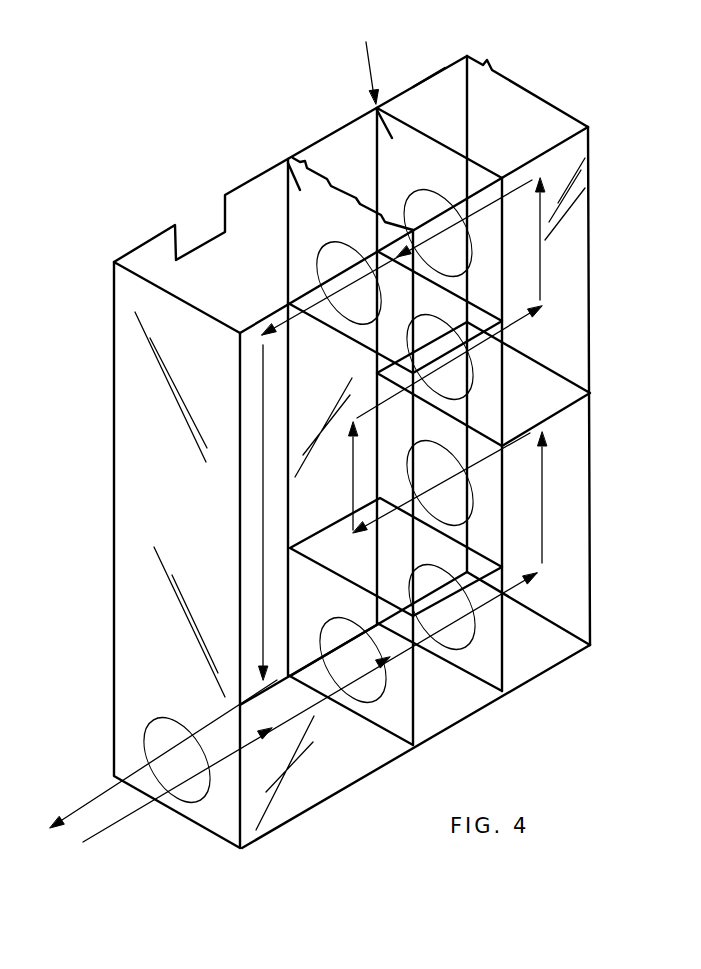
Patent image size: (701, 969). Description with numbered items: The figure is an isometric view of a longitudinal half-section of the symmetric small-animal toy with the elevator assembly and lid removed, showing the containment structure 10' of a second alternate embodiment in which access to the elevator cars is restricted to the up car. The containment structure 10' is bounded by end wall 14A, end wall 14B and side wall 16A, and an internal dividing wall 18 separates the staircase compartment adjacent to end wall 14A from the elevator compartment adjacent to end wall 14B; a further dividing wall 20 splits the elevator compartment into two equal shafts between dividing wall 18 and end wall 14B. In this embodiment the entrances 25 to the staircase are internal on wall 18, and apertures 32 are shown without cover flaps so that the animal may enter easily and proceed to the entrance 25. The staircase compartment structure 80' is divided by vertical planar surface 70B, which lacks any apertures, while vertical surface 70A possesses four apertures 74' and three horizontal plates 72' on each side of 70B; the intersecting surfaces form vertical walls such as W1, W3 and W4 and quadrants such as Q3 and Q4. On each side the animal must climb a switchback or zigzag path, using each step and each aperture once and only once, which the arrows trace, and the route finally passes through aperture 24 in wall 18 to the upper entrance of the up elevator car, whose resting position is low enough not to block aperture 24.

The containment structure 10' is at (415, 464).
The end wall 14A is at (520, 105).
The end wall 14B is at (114, 318).
The side wall 16A is at (578, 218).
The internal dividing wall 18 is at (290, 242).
The dividing wall 20 is at (238, 250).
The aperture 24 is at (320, 265).
The entrance 25 is at (392, 706).
The aperture 32 is at (143, 737).
The vertical planar surface 70A is at (368, 112).
The vertical planar surface 70B is at (433, 95).
The horizontal plate 72' is at (477, 461).
The aperture 74' is at (543, 479).
The staircase compartment structure 80' is at (367, 59).
The quadrant Q3 is at (509, 216).
The quadrant Q4 is at (394, 256).
The vertical wall W1 is at (340, 128).
The vertical wall W3 is at (421, 83).
The vertical wall W4 is at (447, 152).